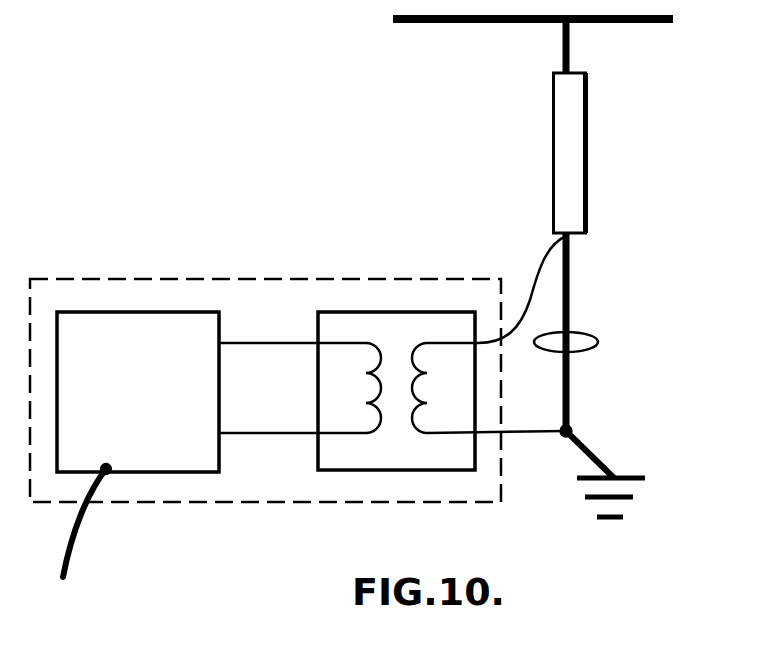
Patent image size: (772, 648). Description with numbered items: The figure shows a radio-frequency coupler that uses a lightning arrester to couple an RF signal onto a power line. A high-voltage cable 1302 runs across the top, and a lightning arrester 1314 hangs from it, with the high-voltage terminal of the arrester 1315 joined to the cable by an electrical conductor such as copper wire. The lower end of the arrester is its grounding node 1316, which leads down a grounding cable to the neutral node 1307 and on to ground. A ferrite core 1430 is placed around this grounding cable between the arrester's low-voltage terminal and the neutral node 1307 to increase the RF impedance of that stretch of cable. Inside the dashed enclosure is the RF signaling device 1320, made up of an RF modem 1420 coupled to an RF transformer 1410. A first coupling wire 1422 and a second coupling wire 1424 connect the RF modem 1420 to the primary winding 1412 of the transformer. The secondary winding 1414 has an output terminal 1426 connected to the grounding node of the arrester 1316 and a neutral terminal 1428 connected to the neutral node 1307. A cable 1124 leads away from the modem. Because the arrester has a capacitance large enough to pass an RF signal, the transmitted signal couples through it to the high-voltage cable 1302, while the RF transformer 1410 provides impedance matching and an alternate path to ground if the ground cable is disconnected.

The high-voltage cable 1302 is at (400, 23).
The high-voltage terminal of the arrester 1315 is at (578, 68).
The lightning arrester 1314 is at (588, 153).
The grounding node of the arrester 1316 is at (538, 270).
The ferrite core 1430 is at (598, 338).
The neutral node 1307 is at (576, 425).
The RF signaling device 1320 is at (192, 279).
The RF modem 1420 is at (138, 312).
The output cable 1124 is at (80, 533).
The first coupling wire 1422 is at (288, 343).
The second coupling wire 1424 is at (273, 435).
The RF transformer 1410 is at (397, 312).
The primary winding 1412 is at (363, 435).
The secondary winding 1414 is at (428, 435).
The output terminal 1426 is at (477, 332).
The neutral terminal 1428 is at (477, 437).